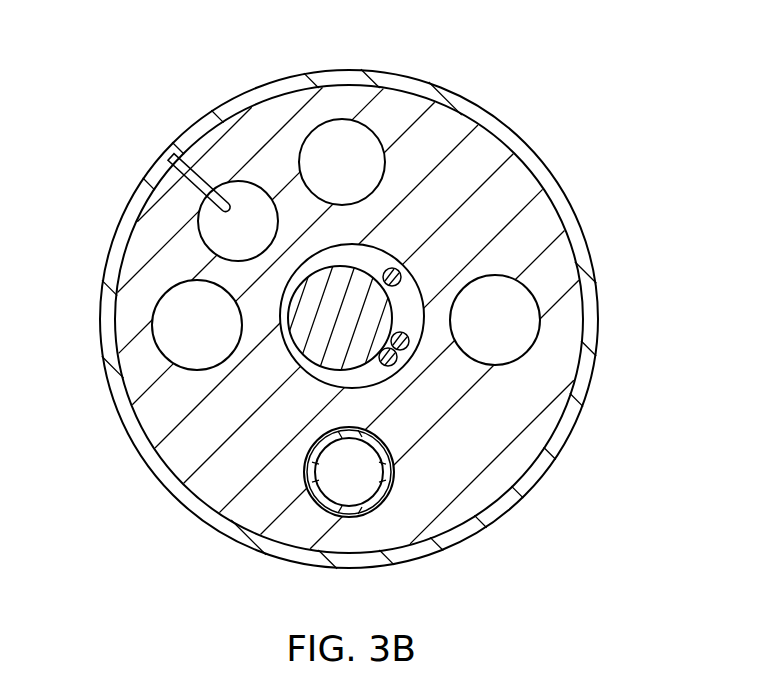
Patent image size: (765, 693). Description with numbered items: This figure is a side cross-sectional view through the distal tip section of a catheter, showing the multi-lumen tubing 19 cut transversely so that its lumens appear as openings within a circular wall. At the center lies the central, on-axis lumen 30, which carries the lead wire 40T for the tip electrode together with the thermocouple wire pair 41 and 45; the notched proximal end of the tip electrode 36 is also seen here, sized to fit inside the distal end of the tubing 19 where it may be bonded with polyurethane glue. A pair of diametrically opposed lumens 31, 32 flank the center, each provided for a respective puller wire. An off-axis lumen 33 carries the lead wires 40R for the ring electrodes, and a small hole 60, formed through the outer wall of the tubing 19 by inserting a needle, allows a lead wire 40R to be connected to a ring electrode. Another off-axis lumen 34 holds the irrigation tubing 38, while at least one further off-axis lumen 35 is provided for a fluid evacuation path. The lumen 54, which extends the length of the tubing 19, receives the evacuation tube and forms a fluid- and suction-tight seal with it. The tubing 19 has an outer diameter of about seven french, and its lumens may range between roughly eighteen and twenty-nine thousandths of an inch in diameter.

The tubing 19 is at (187, 482).
The central on-axis lumen 30 is at (304, 373).
The diametrically opposed lumen 31 is at (542, 323).
The diametrically opposed lumen 32 is at (150, 328).
The off-axis lumen 33 is at (197, 213).
The off-axis lumen 34 is at (318, 511).
The off-axis lumen 35 is at (341, 118).
The proximal end of the tip electrode 36 is at (358, 270).
The irrigation tubing 38 is at (372, 511).
The lead wire 40R is at (221, 188).
The lead wire 40T is at (396, 267).
The thermocouple wire 41 is at (407, 349).
The thermocouple wire 45 is at (388, 366).
The lumen 54 is at (326, 177).
The small hole 60 is at (201, 166).